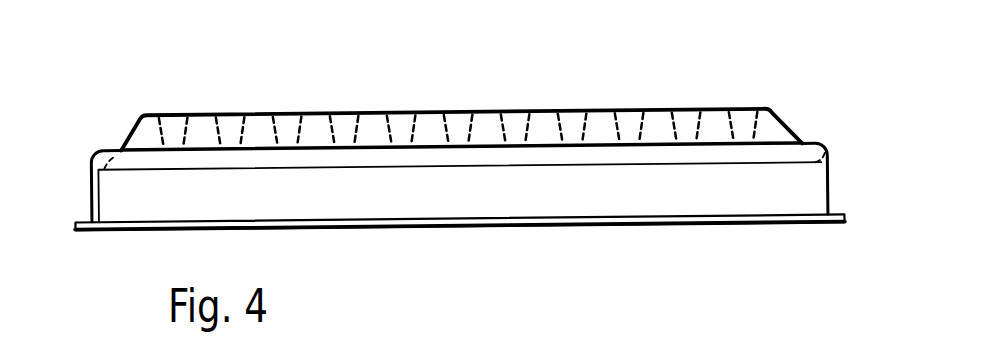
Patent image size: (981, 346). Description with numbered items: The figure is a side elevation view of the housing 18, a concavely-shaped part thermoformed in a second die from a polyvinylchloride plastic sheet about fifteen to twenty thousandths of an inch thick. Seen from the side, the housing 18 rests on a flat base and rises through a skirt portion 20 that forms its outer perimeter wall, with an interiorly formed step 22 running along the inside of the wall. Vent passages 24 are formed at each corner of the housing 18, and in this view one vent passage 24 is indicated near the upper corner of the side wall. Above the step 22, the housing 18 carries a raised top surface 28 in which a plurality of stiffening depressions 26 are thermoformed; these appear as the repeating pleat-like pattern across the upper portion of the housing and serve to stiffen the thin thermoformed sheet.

The housing 18 is at (92, 195).
The skirt portion 20 is at (824, 228).
The interiorly formed step 22 is at (818, 163).
The vent passages 24 is at (828, 165).
The stiffening depressions 26 is at (345, 148).
The top surface 28 is at (430, 113).